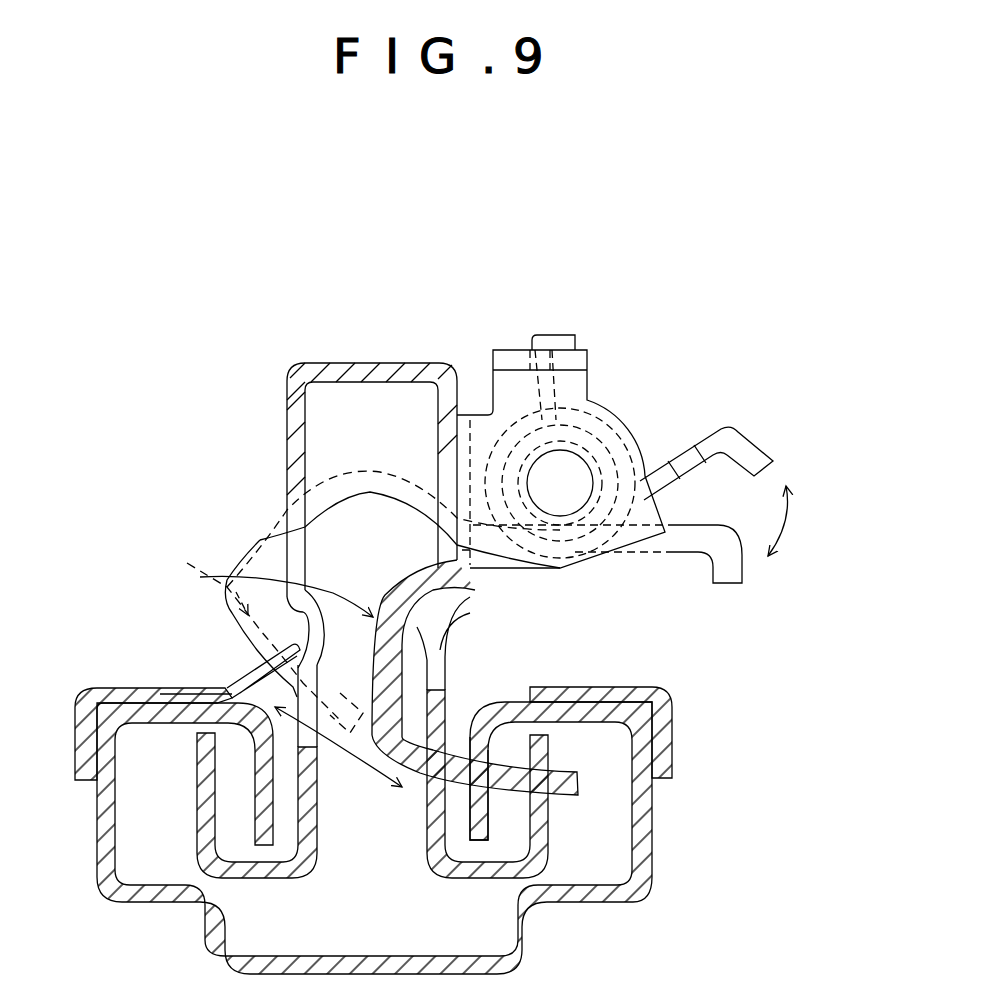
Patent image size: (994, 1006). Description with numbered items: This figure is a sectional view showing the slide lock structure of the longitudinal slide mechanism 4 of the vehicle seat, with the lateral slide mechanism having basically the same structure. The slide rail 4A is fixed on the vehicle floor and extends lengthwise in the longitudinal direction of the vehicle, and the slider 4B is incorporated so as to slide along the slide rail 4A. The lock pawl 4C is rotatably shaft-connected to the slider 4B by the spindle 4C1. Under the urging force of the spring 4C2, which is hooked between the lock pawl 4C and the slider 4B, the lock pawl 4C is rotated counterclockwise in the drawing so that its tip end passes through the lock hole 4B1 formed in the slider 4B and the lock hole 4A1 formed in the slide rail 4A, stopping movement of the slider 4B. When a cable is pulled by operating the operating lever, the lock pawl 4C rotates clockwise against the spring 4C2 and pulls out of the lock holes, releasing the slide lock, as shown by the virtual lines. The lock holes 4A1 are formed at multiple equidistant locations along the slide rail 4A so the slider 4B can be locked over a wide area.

The longitudinal slide mechanism 4 is at (665, 250).
The slide rail 4A is at (655, 802).
The lock hole 4A1 is at (507, 745).
The slider 4B is at (283, 411).
The lock hole 4B1 is at (520, 798).
The lock pawl 4C is at (240, 595).
The spindle 4C1 is at (560, 483).
The spring 4C2 is at (582, 405).